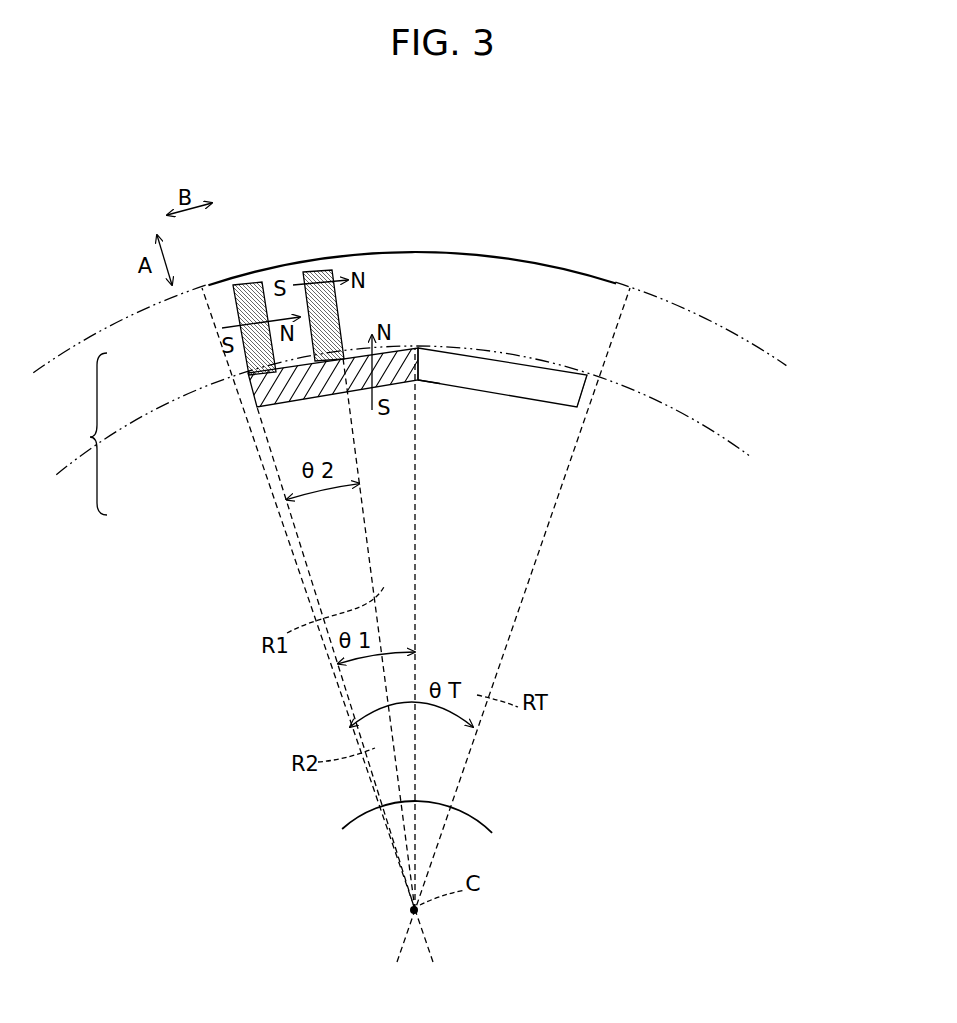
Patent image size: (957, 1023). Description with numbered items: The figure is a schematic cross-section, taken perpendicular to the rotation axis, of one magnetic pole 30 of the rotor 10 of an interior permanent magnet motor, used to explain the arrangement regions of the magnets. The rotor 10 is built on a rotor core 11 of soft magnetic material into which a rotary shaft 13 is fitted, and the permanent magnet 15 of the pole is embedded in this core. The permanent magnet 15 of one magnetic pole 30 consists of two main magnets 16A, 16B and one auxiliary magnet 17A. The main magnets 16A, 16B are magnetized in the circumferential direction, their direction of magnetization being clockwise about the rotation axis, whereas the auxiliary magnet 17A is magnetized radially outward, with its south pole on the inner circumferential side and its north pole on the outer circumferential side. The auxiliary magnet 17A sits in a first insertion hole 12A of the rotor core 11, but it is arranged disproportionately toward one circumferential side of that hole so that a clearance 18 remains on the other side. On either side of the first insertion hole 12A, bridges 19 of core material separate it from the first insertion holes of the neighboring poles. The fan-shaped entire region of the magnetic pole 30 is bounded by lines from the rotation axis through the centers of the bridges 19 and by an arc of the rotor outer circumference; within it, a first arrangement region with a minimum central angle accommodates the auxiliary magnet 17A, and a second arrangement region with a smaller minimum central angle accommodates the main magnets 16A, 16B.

The rotor 10 is at (602, 245).
The magnetic pole 30 is at (492, 280).
The rotor core 11 is at (338, 530).
The first insertion hole 12A is at (440, 377).
The rotary shaft 13 is at (468, 812).
The permanent magnet 15 is at (82, 434).
The main magnet 16A is at (238, 310).
The main magnet 16B is at (332, 328).
The auxiliary magnet 17A is at (278, 392).
The clearance 18 is at (507, 390).
The bridge 19 is at (243, 393).